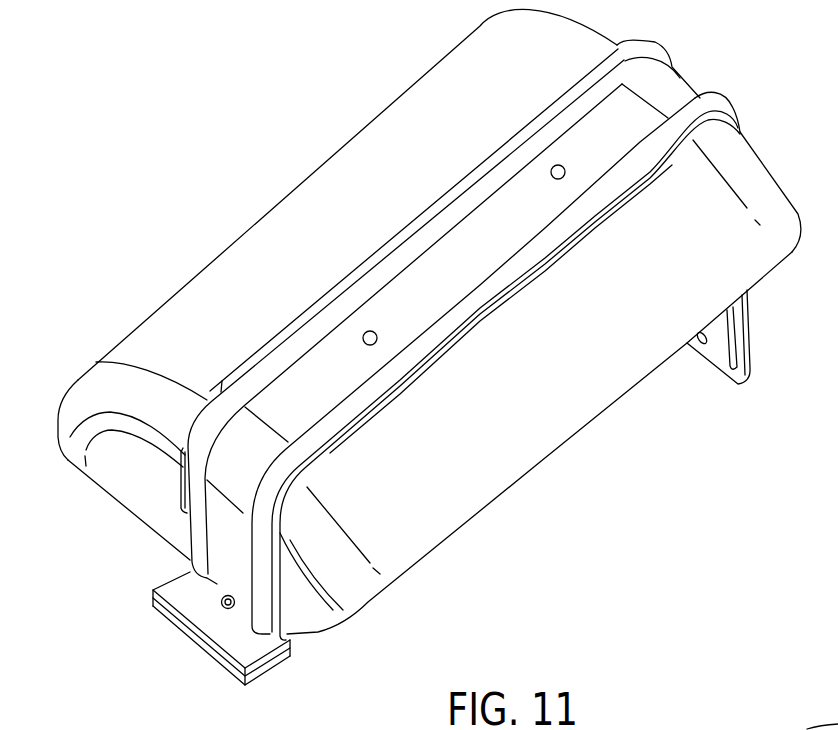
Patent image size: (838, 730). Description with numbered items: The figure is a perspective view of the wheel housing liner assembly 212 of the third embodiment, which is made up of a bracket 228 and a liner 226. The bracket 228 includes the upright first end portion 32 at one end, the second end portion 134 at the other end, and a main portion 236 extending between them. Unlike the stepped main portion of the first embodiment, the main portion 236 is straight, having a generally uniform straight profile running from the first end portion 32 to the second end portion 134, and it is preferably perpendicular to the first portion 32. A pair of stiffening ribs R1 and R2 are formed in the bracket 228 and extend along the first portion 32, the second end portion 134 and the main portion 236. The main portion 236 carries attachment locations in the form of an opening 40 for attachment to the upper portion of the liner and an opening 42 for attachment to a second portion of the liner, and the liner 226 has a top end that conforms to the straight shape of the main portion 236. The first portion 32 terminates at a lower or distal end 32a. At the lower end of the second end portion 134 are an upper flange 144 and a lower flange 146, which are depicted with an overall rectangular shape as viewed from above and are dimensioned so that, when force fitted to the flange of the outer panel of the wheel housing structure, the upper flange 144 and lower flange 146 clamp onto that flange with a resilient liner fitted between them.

The wheel housing liner assembly 212 is at (220, 180).
The bracket 228 is at (468, 162).
The main portion 236 is at (473, 257).
The liner 226 is at (553, 400).
The attachment location (opening) 40 is at (566, 178).
The attachment location (opening) 42 is at (378, 342).
The first portion 32 is at (750, 322).
The distal end 32a is at (745, 383).
The second end portion 134 is at (230, 542).
The upper flange 144 is at (185, 598).
The lower flange 146 is at (212, 660).
The stiffening rib R1 is at (650, 54).
The stiffening rib R2 is at (715, 110).